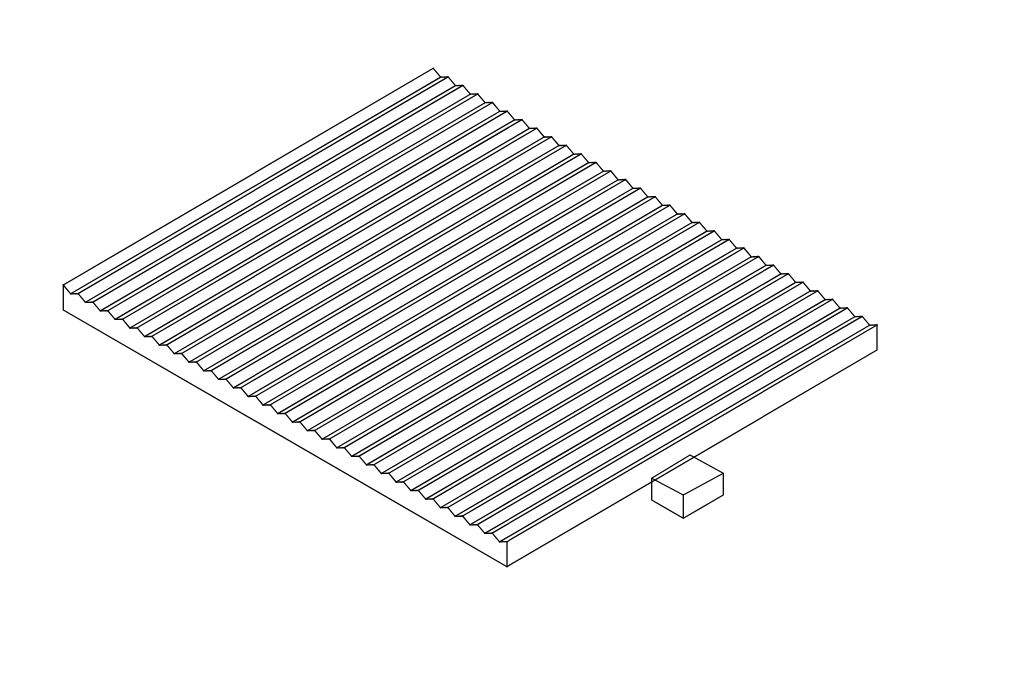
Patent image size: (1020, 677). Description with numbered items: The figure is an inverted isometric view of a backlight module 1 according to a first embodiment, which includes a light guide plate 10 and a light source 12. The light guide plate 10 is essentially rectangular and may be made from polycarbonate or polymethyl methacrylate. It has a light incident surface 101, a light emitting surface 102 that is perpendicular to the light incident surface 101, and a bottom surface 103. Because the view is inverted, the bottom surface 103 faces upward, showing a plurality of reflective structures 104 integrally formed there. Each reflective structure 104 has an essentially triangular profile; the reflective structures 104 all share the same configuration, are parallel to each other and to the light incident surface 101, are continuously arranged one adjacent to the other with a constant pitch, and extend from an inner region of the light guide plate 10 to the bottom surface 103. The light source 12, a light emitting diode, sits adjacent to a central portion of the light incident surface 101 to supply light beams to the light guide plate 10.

The backlight module 1 is at (441, 36).
The light guide plate 10 is at (693, 204).
The light source 12 is at (692, 474).
The light incident surface 101 is at (602, 502).
The light emitting surface 102 is at (328, 464).
The bottom surface 103 is at (840, 340).
The reflective structures 104 is at (833, 309).